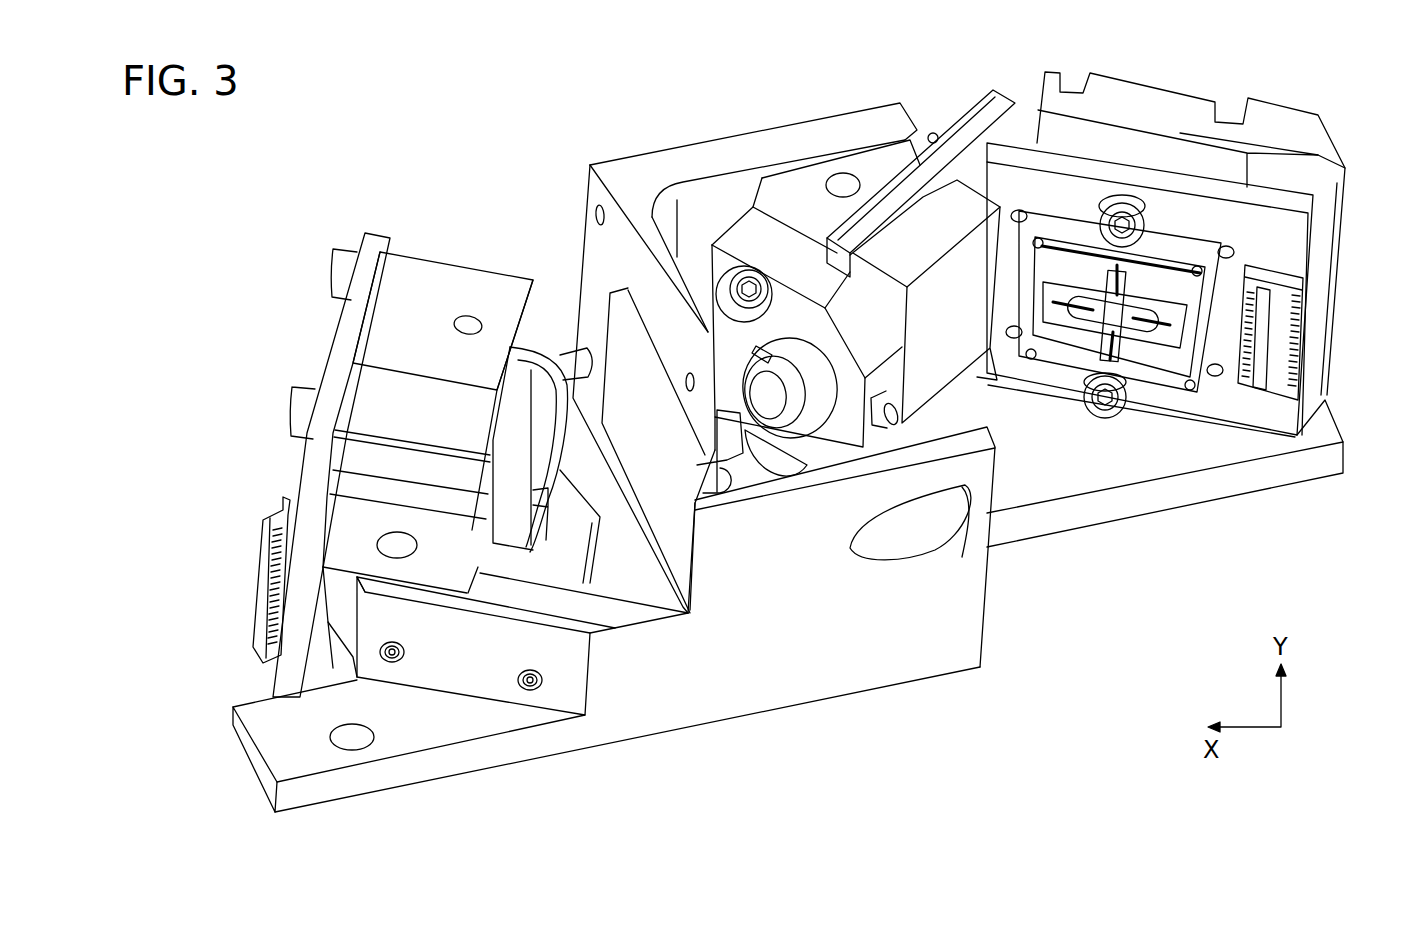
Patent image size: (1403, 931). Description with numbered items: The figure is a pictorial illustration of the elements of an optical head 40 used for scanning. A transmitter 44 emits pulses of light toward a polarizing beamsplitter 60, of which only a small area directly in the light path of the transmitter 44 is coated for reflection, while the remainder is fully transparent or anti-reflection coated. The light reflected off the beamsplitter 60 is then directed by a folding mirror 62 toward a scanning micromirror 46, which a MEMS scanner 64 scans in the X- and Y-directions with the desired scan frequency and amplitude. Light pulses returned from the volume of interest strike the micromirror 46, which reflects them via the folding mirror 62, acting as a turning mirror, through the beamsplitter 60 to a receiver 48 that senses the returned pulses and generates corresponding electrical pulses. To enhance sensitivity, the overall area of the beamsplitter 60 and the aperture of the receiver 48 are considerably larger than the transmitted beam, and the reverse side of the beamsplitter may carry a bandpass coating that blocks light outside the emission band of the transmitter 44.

The optical head 40 is at (1364, 814).
The transmitter 44 is at (738, 228).
The scanning micromirror 46 is at (1152, 305).
The receiver 48 is at (514, 287).
The polarizing beamsplitter 60 is at (680, 535).
The folding mirror 62 is at (915, 523).
The MEMS scanner 64 is at (1197, 247).